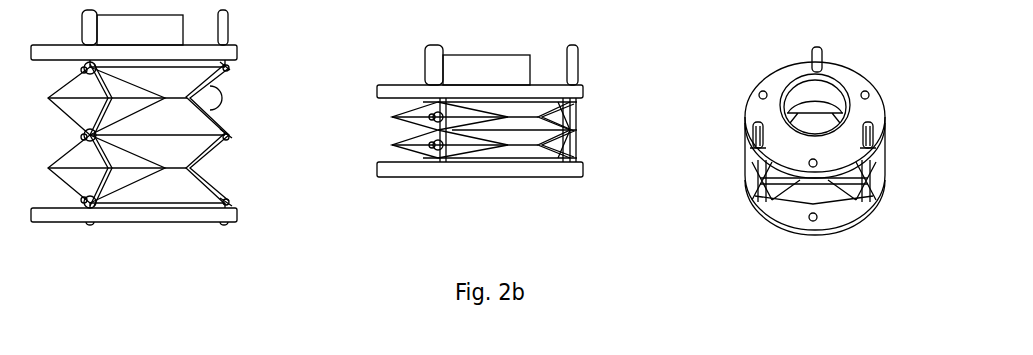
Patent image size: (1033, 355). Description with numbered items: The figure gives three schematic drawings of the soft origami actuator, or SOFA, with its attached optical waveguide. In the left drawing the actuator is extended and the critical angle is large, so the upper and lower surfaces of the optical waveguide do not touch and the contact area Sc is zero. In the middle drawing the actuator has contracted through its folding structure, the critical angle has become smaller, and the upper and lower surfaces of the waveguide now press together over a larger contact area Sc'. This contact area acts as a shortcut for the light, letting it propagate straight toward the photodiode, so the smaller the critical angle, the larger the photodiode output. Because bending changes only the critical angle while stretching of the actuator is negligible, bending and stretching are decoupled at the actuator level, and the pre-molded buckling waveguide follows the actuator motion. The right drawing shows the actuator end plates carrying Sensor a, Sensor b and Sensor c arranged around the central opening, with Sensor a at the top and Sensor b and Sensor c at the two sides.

The contact area Sc is at (239, 134).
The contact area Sc' is at (587, 145).
The sensor a Sensor a is at (806, 46).
The sensor b Sensor b is at (724, 138).
The sensor c Sensor c is at (898, 138).